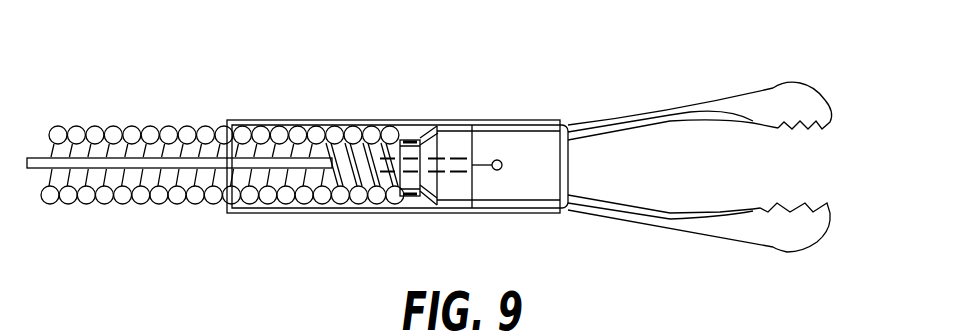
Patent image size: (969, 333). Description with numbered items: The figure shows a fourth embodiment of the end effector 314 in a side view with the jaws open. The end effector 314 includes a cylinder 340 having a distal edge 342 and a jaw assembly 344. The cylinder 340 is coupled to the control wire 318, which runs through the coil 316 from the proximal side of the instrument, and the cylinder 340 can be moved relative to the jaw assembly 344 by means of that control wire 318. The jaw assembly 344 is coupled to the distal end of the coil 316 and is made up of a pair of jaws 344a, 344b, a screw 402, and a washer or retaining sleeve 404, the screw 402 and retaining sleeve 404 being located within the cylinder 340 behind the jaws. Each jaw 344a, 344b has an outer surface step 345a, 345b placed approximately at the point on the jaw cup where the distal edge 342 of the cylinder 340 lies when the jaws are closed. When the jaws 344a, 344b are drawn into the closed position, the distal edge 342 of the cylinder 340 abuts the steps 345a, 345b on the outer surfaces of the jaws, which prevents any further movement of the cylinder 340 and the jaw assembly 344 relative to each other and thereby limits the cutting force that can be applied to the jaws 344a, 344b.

The end effector 314 is at (640, 252).
The coil 316 is at (77, 135).
The control wire 318 is at (113, 163).
The cylinder 340 is at (352, 125).
The distal edge 342 is at (570, 180).
The jaw assembly 344 is at (722, 75).
The jaw 344a is at (808, 100).
The jaw 344b is at (810, 230).
The outer surface step 345a is at (775, 83).
The outer surface step 345b is at (770, 248).
The screw 402 is at (372, 206).
The washer or retaining sleeve 404 is at (418, 203).